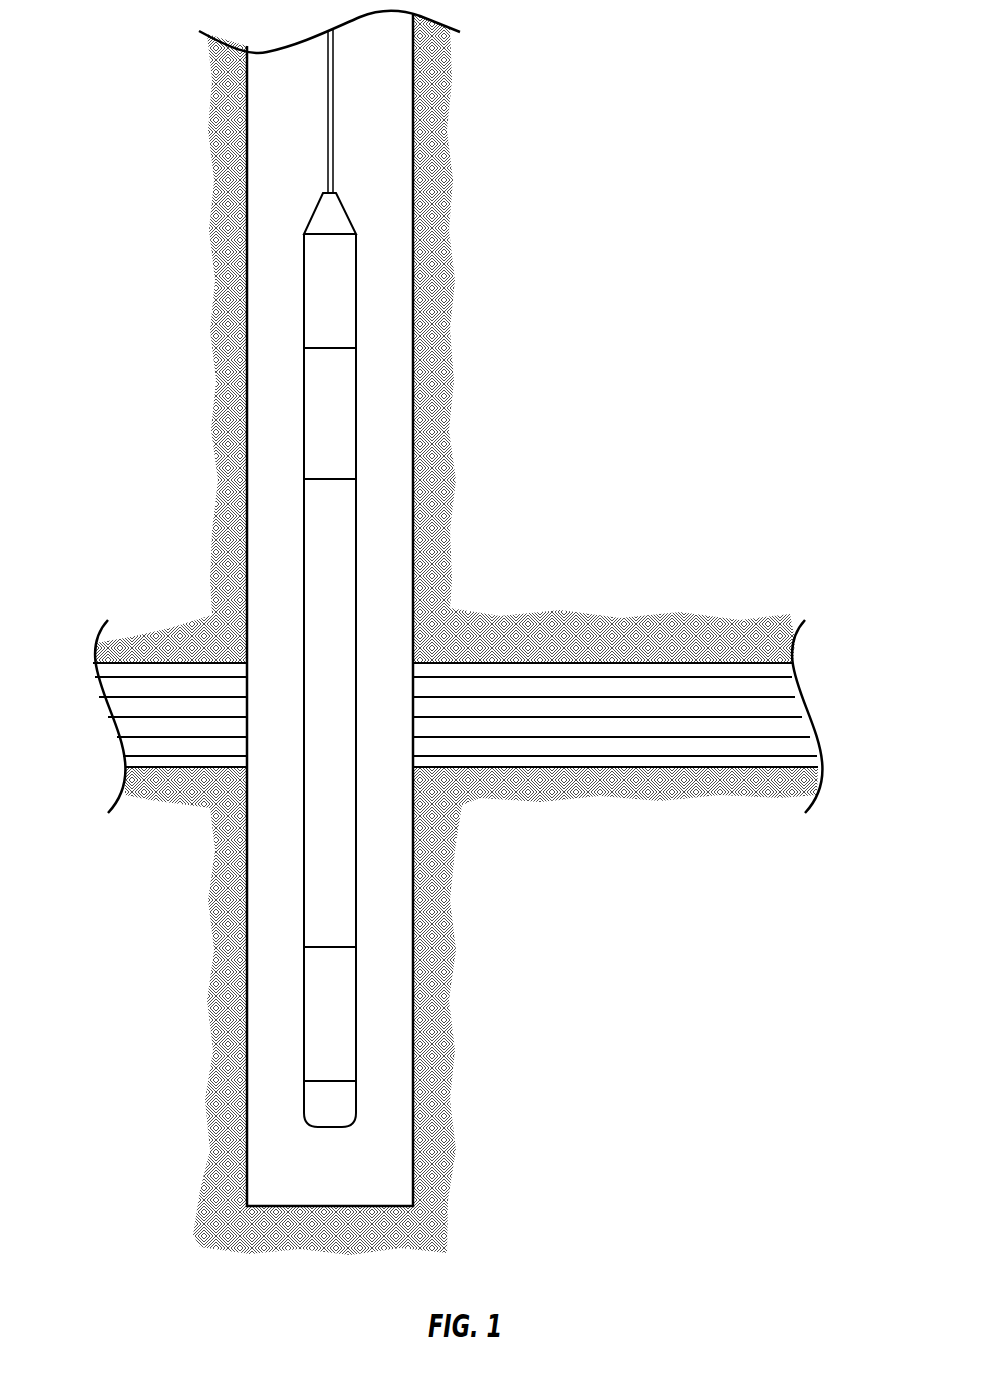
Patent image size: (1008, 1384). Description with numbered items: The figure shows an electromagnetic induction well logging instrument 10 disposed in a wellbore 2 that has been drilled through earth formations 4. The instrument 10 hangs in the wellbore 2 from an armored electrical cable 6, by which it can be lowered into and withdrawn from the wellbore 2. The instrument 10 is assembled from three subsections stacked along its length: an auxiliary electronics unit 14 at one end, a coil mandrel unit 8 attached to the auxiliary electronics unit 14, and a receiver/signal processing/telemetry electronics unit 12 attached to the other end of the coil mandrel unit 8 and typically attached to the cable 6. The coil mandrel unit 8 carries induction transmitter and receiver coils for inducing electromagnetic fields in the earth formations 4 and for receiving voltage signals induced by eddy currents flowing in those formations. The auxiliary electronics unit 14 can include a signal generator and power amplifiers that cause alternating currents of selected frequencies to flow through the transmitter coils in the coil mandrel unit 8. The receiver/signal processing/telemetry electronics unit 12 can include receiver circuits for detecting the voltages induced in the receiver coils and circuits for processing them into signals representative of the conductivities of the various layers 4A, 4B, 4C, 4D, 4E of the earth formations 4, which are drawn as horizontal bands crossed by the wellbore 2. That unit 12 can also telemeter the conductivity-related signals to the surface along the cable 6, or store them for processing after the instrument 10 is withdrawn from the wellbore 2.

The wellbore 2 is at (390, 149).
The earth formations 4 is at (468, 627).
The layer 4A is at (790, 670).
The layer 4B is at (787, 688).
The layer 4C is at (799, 728).
The layer 4D is at (804, 742).
The layer 4E is at (810, 763).
The armored electrical cable 6 is at (329, 121).
The coil mandrel unit 8 is at (320, 671).
The electromagnetic induction well logging instrument 10 is at (383, 327).
The receiver/signal processing/telemetry electronics unit 12 is at (320, 407).
The auxiliary electronics unit 14 is at (320, 1018).